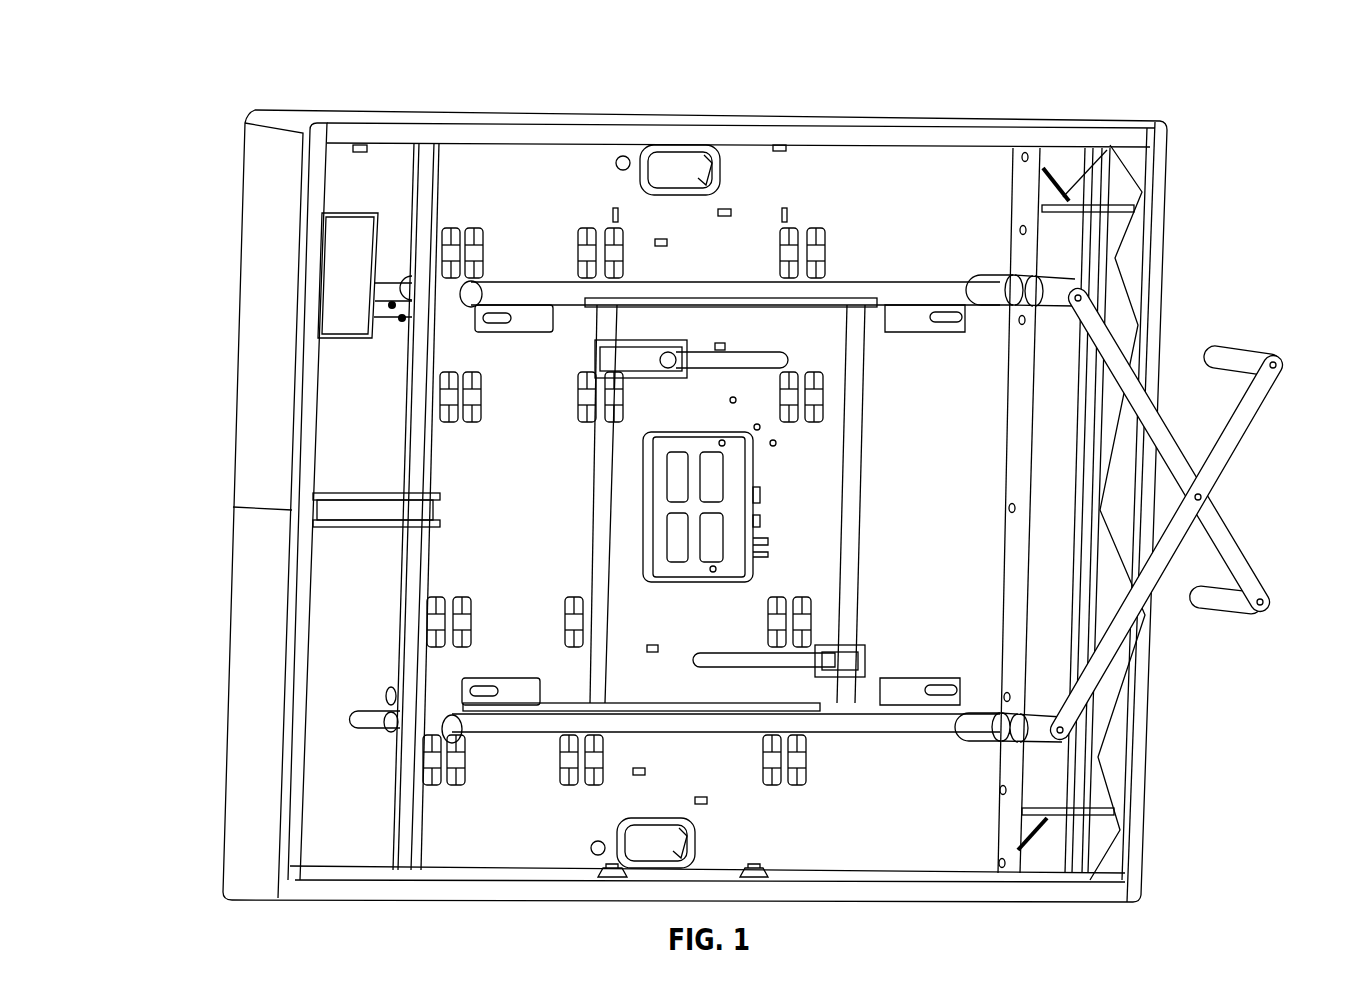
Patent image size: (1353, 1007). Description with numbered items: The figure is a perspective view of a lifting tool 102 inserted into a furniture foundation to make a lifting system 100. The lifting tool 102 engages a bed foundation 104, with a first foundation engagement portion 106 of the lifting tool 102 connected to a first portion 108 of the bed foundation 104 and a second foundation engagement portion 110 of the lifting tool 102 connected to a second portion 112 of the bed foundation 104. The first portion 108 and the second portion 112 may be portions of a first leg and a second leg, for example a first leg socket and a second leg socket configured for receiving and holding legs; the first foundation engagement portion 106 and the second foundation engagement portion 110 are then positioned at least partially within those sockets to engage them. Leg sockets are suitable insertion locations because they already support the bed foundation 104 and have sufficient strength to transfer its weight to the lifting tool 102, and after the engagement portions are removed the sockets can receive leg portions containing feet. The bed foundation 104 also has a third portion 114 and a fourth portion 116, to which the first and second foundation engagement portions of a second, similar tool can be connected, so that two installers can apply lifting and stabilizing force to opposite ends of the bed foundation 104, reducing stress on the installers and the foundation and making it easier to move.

The lifting system 100 is at (222, 74).
The lifting tool 102 is at (1251, 485).
The bed foundation 104 is at (460, 492).
The first foundation engagement portion 106 is at (1055, 290).
The first portion 108 is at (993, 288).
The second foundation engagement portion 110 is at (1028, 730).
The second portion 112 is at (972, 727).
The third portion 114 is at (455, 290).
The fourth portion 116 is at (445, 740).